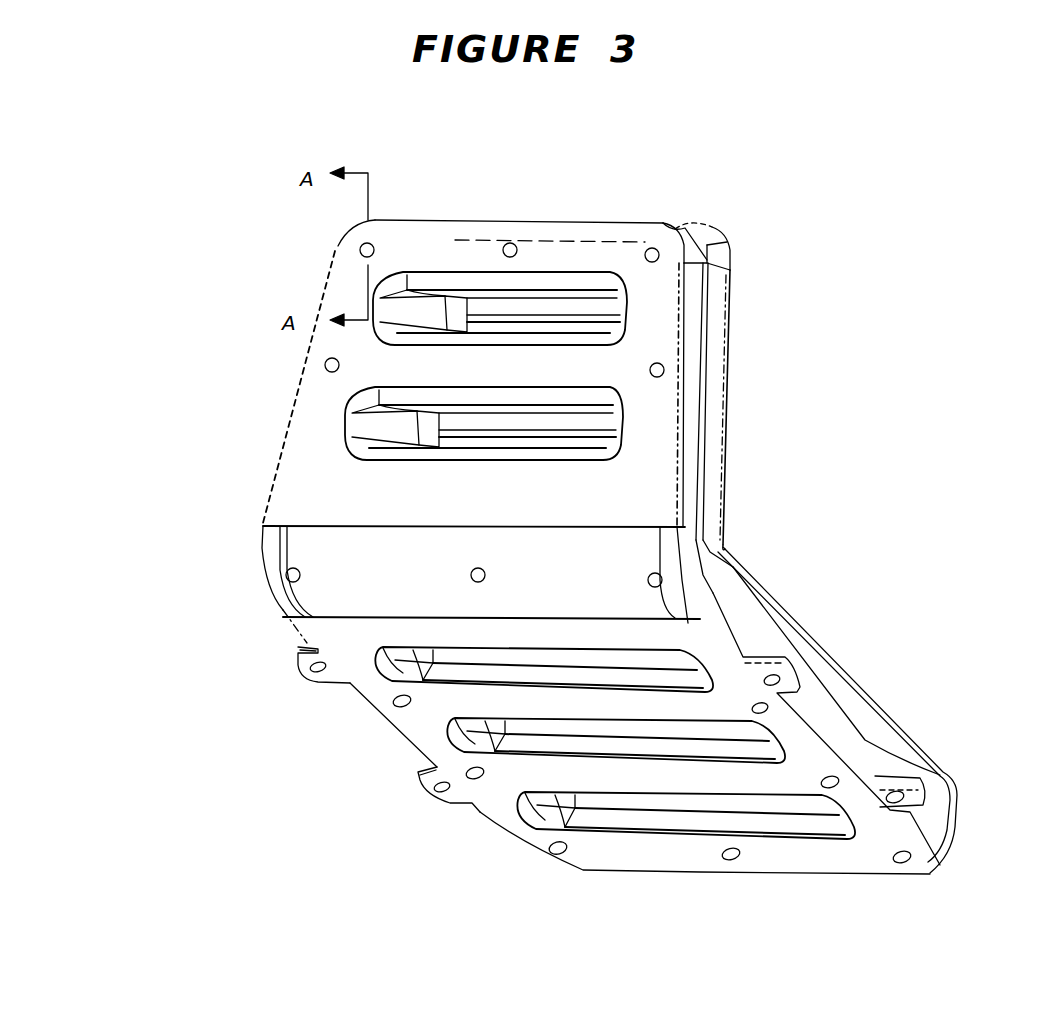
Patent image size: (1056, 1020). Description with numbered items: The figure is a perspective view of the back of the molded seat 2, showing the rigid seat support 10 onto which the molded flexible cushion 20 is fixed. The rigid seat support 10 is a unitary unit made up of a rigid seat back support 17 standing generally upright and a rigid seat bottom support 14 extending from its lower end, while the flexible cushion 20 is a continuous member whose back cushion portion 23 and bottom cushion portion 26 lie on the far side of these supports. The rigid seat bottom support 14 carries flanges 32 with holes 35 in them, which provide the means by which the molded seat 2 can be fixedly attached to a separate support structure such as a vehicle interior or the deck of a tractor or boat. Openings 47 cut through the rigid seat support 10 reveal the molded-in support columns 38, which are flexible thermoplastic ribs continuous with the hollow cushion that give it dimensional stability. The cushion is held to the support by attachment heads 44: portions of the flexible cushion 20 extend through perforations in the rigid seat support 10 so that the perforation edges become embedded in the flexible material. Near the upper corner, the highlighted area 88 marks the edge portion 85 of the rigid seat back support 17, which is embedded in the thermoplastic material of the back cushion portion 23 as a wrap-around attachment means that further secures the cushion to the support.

The molded seat 2 is at (880, 228).
The rigid seat support 10 is at (250, 565).
The rigid seat bottom support 14 is at (375, 692).
The rigid seat back support 17 is at (300, 420).
The molded flexible cushion 20 is at (745, 540).
The back cushion portion 23 is at (716, 408).
The bottom cushion portion 26 is at (857, 702).
The flanges 32 is at (300, 653).
The holes 35 is at (787, 658).
The molded-in support columns 38 is at (552, 292).
The attachment heads 44 is at (372, 248).
The openings 47 is at (418, 272).
The edge portion 85 is at (720, 248).
The highlighted area 88 is at (697, 225).